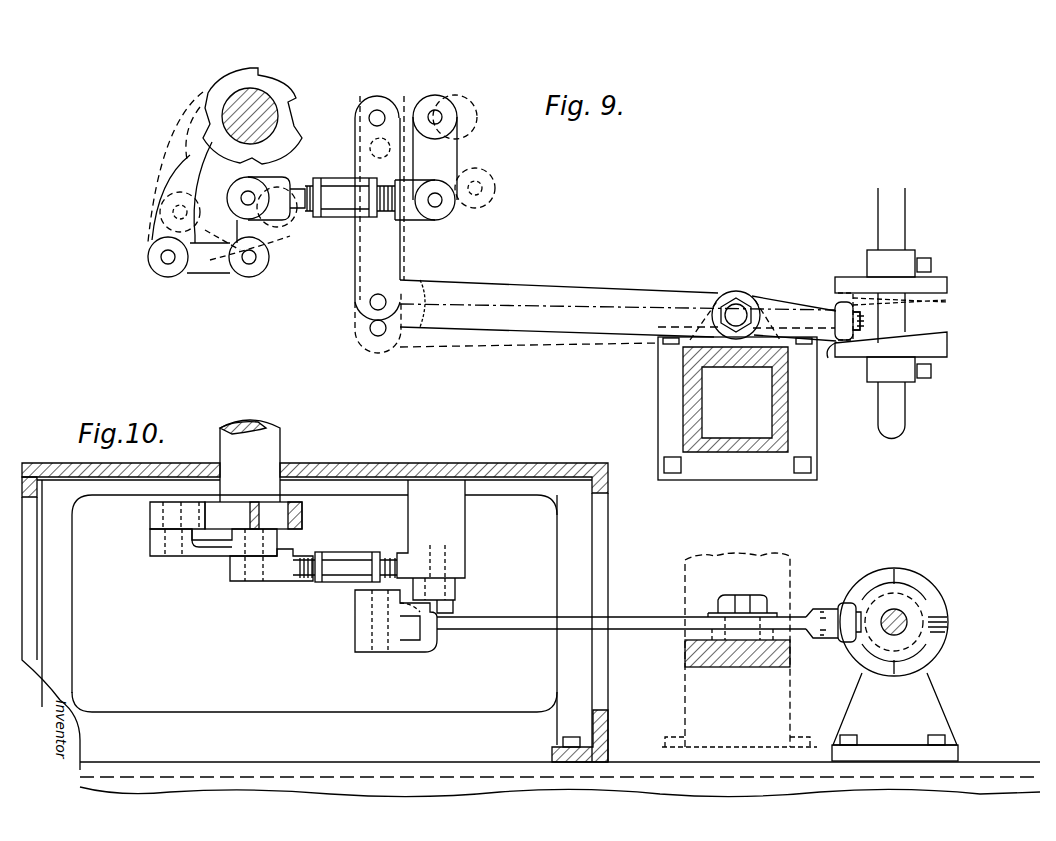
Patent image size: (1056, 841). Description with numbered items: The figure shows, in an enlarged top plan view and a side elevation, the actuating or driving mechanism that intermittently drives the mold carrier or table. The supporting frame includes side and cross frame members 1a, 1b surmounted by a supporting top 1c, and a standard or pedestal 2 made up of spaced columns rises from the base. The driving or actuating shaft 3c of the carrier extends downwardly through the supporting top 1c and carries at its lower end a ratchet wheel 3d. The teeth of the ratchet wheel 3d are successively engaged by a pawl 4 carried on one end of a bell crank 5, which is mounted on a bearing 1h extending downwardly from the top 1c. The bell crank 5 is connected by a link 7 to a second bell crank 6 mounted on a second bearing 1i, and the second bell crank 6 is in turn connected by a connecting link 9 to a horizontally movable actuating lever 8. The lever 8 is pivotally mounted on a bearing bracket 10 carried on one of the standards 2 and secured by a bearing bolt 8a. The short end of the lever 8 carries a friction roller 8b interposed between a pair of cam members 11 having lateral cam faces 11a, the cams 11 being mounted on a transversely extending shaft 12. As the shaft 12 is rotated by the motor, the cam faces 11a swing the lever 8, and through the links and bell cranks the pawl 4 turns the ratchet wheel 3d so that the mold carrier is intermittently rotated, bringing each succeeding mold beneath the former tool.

In FIG. 10, the side frame member 1a is at (574, 552).
In FIG. 10, the cross frame member 1b is at (610, 560).
In FIG. 10, the supporting top 1c is at (500, 460).
In FIG. 9, the bearing 1h is at (266, 263).
In FIG. 10, the bearing 1h is at (270, 545).
In FIG. 10, the second bearing 1i is at (455, 522).
In FIG. 9, the standard or pedestal 2 is at (690, 403).
In FIG. 10, the standard or pedestal 2 is at (700, 692).
In FIG. 9, the driving or actuating shaft 3c is at (272, 98).
In FIG. 10, the driving or actuating shaft 3c is at (260, 440).
In FIG. 9, the ratchet wheel 3d is at (290, 110).
In FIG. 10, the ratchet wheel 3d is at (302, 515).
In FIG. 9, the pawl 4 is at (170, 192).
In FIG. 10, the pawl 4 is at (190, 512).
In FIG. 9, the bell crank 5 is at (215, 262).
In FIG. 10, the bell crank 5 is at (212, 545).
In FIG. 9, the second bell crank 6 is at (450, 150).
In FIG. 10, the second bell crank 6 is at (455, 592).
In FIG. 9, the link 7 is at (335, 178).
In FIG. 10, the link 7 is at (340, 552).
In FIG. 9, the actuating lever 8 is at (520, 300).
In FIG. 10, the actuating lever 8 is at (532, 617).
In FIG. 9, the bearing bolt 8a is at (736, 310).
In FIG. 10, the bearing bolt 8a is at (742, 595).
In FIG. 9, the friction roller 8b is at (843, 343).
In FIG. 10, the friction roller 8b is at (840, 610).
In FIG. 9, the connecting link 9 is at (398, 252).
In FIG. 10, the connecting link 9 is at (362, 624).
In FIG. 9, the bearing bracket 10 is at (760, 345).
In FIG. 10, the bearing bracket 10 is at (697, 652).
In FIG. 9, the cam member 11 is at (947, 285).
In FIG. 10, the cam member 11 is at (933, 590).
In FIG. 9, the lateral cam face 11a is at (843, 298).
In FIG. 10, the lateral cam face 11a is at (946, 625).
In FIG. 9, the transversely extending shaft 12 is at (896, 410).
In FIG. 10, the transversely extending shaft 12 is at (889, 609).